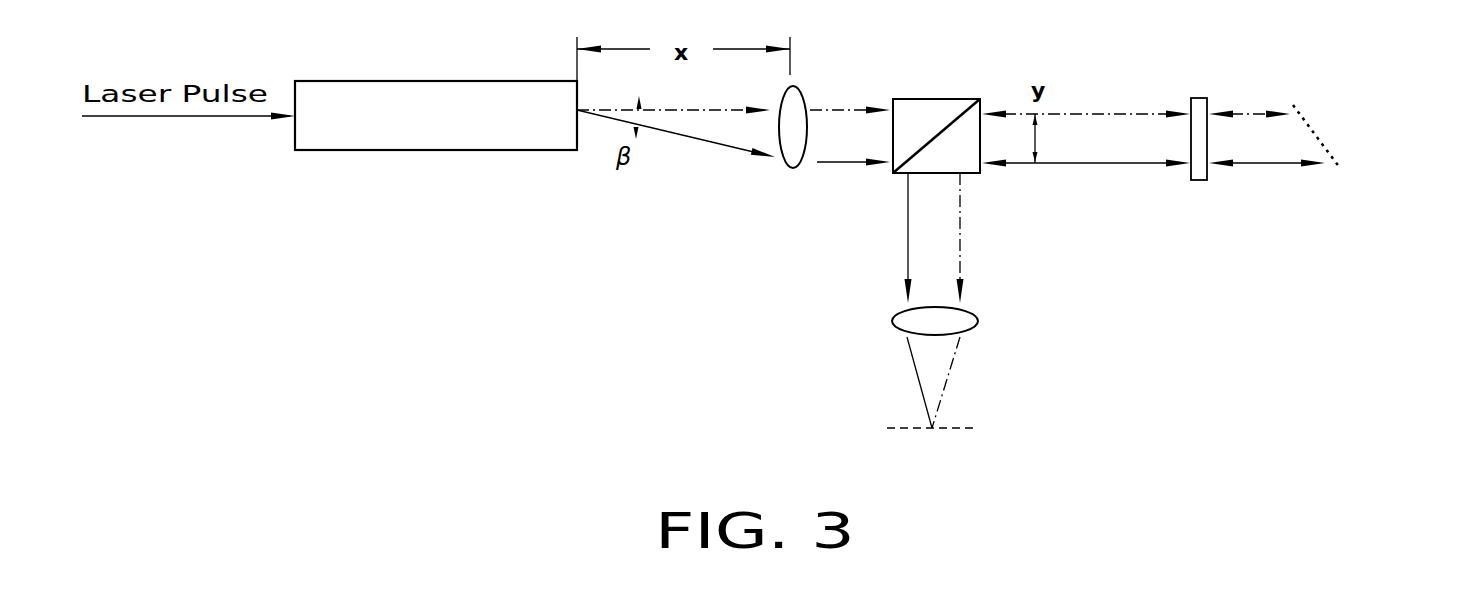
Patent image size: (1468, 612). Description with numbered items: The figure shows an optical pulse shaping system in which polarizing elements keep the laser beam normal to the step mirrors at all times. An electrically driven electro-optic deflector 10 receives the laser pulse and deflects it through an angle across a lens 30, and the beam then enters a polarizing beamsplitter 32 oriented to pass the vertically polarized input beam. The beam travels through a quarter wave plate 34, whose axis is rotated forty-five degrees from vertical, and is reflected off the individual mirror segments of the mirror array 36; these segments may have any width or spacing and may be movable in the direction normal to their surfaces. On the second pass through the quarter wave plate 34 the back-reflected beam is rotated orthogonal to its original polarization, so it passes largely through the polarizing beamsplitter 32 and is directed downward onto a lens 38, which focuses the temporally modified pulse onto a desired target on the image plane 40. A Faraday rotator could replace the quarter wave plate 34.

The electro-optic deflector 10 is at (445, 150).
The lens 30 is at (805, 93).
The polarizing beamsplitter 32 is at (898, 99).
The quarter wave plate 34 is at (1198, 98).
The mirror array 36 is at (1337, 128).
The lens 38 is at (978, 320).
The image plane 40 is at (977, 428).